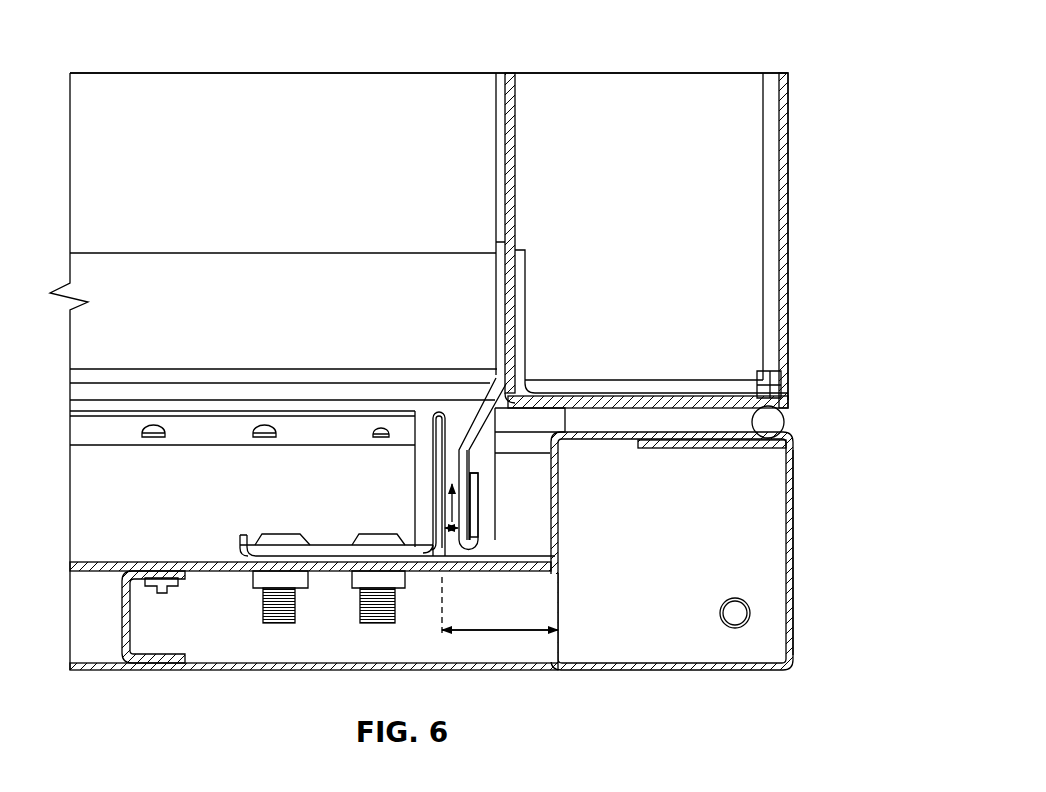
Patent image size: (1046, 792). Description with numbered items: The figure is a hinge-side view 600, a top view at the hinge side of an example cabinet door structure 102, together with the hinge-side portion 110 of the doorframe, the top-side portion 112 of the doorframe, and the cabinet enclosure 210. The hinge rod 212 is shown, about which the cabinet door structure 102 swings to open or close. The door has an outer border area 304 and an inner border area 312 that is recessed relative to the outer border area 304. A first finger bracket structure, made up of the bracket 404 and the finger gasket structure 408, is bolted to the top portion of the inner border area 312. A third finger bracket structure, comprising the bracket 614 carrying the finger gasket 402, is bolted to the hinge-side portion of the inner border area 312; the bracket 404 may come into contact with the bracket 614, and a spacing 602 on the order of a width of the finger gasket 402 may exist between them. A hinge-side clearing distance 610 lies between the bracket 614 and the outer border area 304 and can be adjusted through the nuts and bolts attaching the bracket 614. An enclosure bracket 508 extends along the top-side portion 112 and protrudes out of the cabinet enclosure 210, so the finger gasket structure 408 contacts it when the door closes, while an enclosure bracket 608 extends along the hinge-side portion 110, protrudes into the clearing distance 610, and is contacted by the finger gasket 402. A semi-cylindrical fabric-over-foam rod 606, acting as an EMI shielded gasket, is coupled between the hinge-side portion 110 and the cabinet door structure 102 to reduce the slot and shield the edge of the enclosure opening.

The hinge-side view 600 is at (707, 30).
The cabinet enclosure 210 is at (199, 157).
The hinge-side portion of doorframe 110 is at (627, 204).
The top-side portion of doorframe 112 is at (217, 326).
The enclosure bracket 508 is at (456, 410).
The finger gasket structure 408 is at (309, 444).
The bracket 404 is at (279, 484).
The bracket 614 is at (436, 478).
The enclosure bracket 608 is at (486, 500).
The rod 606 is at (768, 413).
The gap 602 is at (452, 534).
The finger gasket 402 is at (478, 538).
The outer border area 304 is at (631, 629).
The inner border area 312 is at (254, 659).
The cabinet door structure 102 is at (797, 613).
The hinge-side clearing distance 610 is at (500, 632).
The hinge rod 212 is at (738, 628).